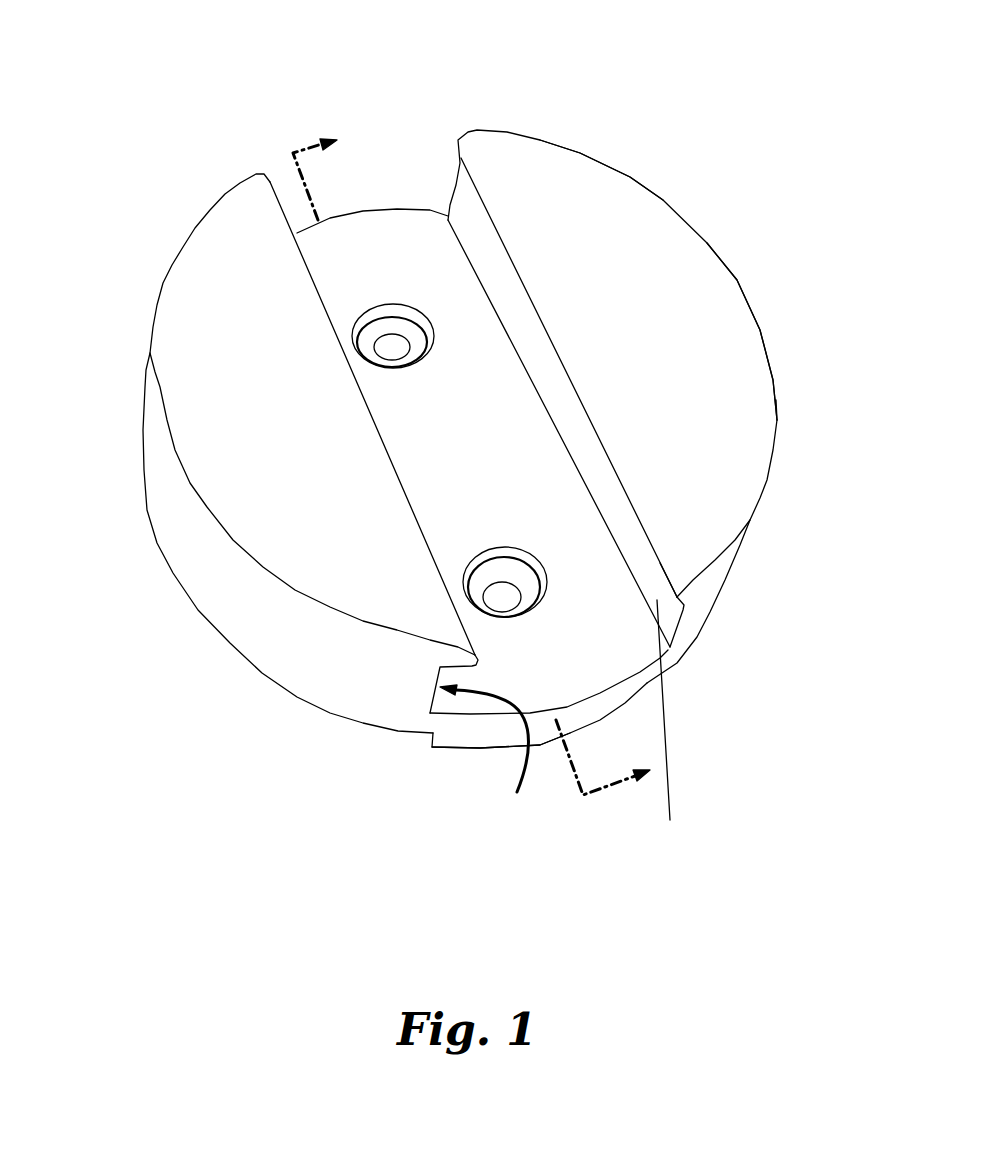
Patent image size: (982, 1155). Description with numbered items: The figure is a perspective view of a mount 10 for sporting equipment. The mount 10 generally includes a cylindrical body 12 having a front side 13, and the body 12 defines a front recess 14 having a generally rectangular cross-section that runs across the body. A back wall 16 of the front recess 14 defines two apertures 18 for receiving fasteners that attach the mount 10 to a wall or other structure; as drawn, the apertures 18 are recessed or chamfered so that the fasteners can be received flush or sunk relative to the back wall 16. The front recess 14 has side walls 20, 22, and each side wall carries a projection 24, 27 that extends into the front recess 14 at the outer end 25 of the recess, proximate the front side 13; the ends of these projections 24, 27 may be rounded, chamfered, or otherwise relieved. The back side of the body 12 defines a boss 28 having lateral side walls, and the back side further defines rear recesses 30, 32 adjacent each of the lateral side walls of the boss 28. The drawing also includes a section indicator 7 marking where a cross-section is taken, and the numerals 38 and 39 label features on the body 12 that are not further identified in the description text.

The section line 7 is at (465, 475).
The mount 10 is at (752, 183).
The cylindrical body 12 is at (727, 372).
The front side 13 is at (590, 207).
The front recess 14 is at (357, 157).
The back wall 16 is at (432, 433).
The apertures 18 is at (395, 326).
The side wall 20 is at (670, 734).
The side wall 22 is at (484, 768).
The projection 24 is at (675, 596).
The outer end 25 is at (686, 607).
The projection 27 is at (408, 503).
The boss 28 is at (543, 723).
The rear recess 30 is at (691, 673).
The rear recess 32 is at (333, 737).
The side wall 38 is at (627, 263).
The first portion 39 is at (250, 352).